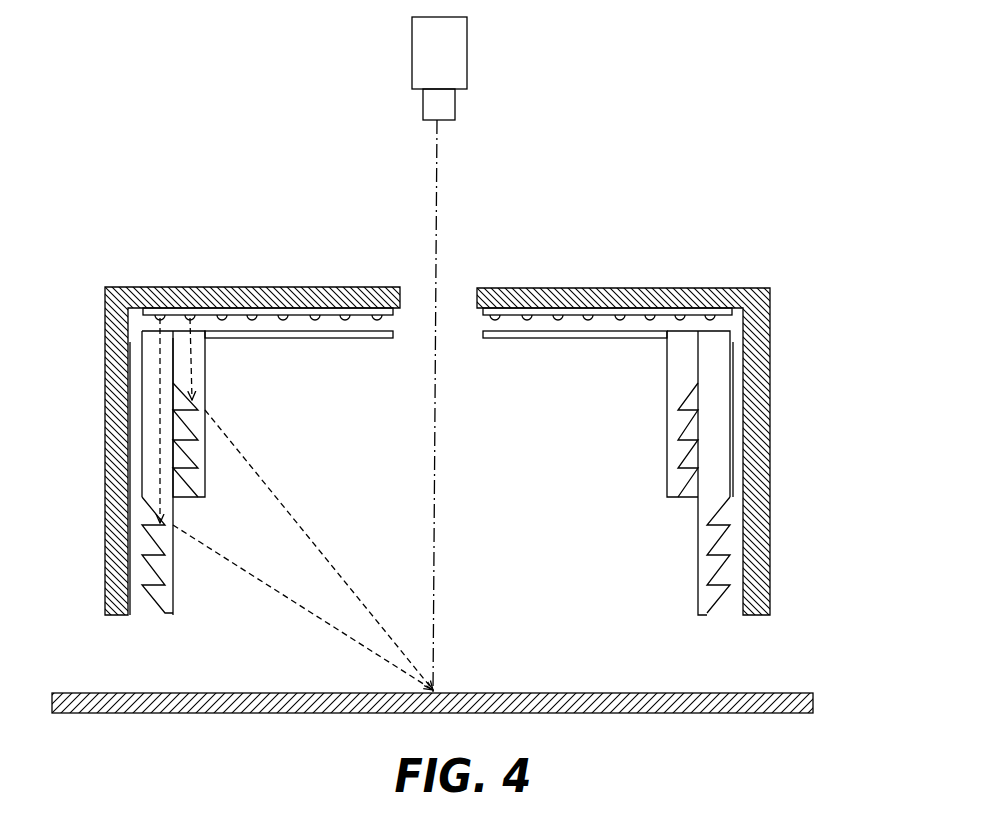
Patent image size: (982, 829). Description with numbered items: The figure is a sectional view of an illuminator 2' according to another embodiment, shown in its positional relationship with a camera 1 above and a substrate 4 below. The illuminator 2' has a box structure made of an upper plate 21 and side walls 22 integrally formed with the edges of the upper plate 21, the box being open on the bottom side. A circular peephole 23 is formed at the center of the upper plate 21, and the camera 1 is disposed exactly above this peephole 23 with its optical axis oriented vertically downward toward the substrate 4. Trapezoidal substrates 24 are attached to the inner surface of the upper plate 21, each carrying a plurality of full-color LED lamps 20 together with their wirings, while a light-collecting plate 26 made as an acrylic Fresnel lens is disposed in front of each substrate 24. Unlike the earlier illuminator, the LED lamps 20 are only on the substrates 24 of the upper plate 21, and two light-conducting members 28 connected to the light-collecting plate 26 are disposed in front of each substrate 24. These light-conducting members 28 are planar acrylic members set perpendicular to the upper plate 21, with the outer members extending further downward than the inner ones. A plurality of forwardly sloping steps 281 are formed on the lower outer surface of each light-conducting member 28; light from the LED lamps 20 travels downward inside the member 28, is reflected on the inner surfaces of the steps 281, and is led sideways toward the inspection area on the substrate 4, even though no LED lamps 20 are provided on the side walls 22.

The camera 1 is at (467, 48).
The illuminator 2' is at (657, 411).
The substrate 4 is at (781, 693).
The full-color LED lamps 20 is at (375, 315).
The upper plate 21 is at (732, 288).
The side walls 22 is at (110, 393).
The peephole 23 is at (477, 290).
The trapezoidal substrates 24 is at (272, 308).
The light-collecting plate 26 is at (332, 338).
The light-conducting members 28 is at (437, 481).
The forwardly sloping steps 281 is at (185, 460).